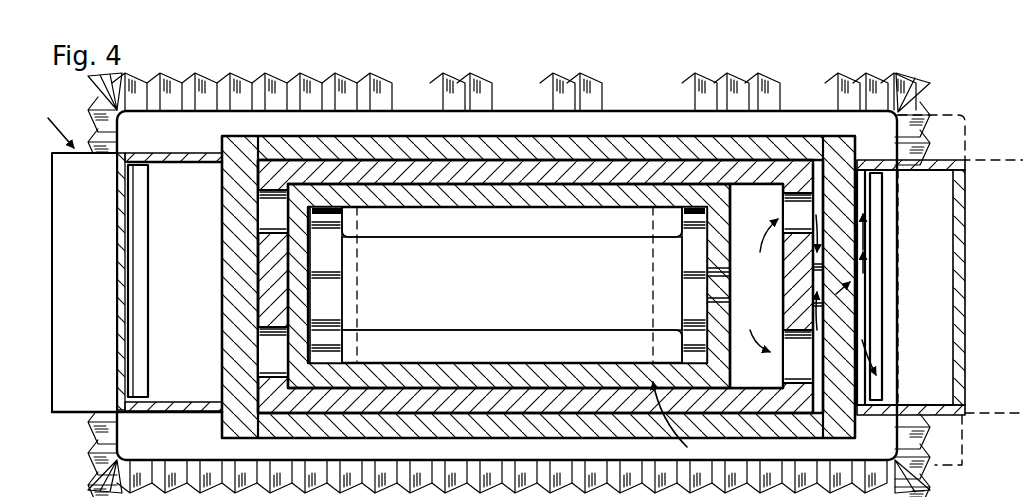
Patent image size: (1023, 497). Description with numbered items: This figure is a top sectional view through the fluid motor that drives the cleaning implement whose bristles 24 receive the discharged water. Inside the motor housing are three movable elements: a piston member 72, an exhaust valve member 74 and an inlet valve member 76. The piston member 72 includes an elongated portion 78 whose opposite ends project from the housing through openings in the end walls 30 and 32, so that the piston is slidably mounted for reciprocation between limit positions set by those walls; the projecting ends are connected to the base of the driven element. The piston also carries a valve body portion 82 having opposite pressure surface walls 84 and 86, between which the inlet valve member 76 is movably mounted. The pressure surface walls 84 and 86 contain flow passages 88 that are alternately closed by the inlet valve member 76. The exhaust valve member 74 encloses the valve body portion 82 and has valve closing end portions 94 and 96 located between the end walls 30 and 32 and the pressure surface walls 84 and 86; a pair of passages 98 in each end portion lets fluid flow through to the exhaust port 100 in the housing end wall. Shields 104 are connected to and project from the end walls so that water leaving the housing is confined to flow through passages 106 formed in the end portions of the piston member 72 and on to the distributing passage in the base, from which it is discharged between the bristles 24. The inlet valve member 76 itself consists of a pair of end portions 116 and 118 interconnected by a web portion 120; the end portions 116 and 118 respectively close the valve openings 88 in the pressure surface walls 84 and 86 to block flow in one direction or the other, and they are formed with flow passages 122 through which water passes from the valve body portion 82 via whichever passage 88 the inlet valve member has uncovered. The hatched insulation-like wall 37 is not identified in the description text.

The bristles 24 is at (407, 118).
The end wall 30 is at (833, 145).
The end wall 32 is at (230, 237).
The insulating frame 37 is at (605, 150).
The piston member 72 is at (366, 283).
The exhaust valve member 74 is at (497, 163).
The inlet valve member 76 is at (454, 311).
The elongated portion 78 is at (67, 253).
The valve body portion 82 is at (533, 366).
The pressure surface wall 84 is at (727, 222).
The pressure surface wall 86 is at (302, 317).
The flow passages 88 is at (779, 336).
The valve closing end portion 94 is at (761, 250).
The valve closing end portion 96 is at (263, 278).
The passages 98 is at (757, 354).
The exhaust port 100 is at (847, 295).
The shields 104 is at (958, 318).
The passages 106 is at (880, 227).
The end portion 116 is at (680, 222).
The end portion 118 is at (343, 218).
The web portion 120 is at (471, 253).
The flow passages 122 is at (336, 238).